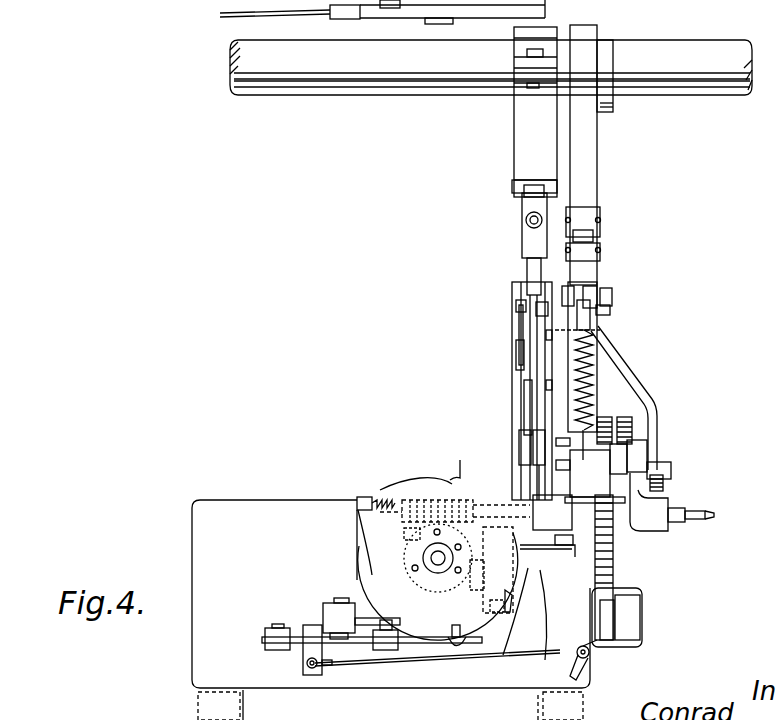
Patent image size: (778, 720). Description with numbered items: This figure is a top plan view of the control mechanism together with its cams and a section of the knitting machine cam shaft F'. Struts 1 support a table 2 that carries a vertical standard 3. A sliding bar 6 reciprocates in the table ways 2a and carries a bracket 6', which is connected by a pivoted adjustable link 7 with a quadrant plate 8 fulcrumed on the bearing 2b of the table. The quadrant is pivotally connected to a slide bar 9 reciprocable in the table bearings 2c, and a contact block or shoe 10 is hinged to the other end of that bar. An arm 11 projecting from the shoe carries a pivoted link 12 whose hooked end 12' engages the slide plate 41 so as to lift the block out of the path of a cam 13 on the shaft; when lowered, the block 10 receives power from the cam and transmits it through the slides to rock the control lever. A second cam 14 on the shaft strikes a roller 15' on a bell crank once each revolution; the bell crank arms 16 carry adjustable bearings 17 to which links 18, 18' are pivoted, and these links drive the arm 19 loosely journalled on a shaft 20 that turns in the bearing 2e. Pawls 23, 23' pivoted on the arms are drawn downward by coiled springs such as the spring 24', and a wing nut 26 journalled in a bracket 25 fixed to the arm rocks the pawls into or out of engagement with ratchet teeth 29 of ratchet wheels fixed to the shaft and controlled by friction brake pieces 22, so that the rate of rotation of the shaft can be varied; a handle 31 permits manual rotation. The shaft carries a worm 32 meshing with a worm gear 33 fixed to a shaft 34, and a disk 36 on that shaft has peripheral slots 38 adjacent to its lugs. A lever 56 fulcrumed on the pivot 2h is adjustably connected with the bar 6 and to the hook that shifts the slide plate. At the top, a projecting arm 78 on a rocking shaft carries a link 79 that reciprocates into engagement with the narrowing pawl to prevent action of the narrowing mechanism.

The struts 1 is at (345, 602).
The table 2 is at (202, 676).
The table ways 2a is at (280, 650).
The bearing 2b is at (610, 632).
The table bearings 2c is at (540, 338).
The bearing 2e is at (548, 510).
The pivot 2h is at (438, 605).
The vertical standard 3 is at (358, 575).
The sliding bar 6 is at (353, 638).
The bracket 6' is at (316, 631).
The pivoted adjustable link 7 is at (320, 558).
The quadrant plate 8 is at (554, 666).
The slide bar 9 is at (524, 390).
The contact block or shoe 10 is at (530, 250).
The arm 11 is at (528, 298).
The link 12 is at (503, 439).
The hooked end 12' is at (558, 661).
The cam 13 is at (522, 157).
The cam 14 is at (588, 52).
The roller 15' is at (614, 223).
The bell crank arms 16 is at (590, 292).
The bearings 17 is at (606, 298).
The link 18 is at (606, 357).
The link 18' is at (619, 398).
The arm 19 is at (548, 553).
The shaft 20 is at (476, 490).
The friction brake pieces 22 is at (640, 625).
The pawl 23 is at (632, 441).
The pawl 23' is at (671, 454).
The coiled spring 24' is at (684, 492).
The bracket 25 is at (622, 568).
The finger piece or wing nut 26 is at (652, 534).
The ratchet teeth 29 is at (612, 400).
The handle 31 is at (715, 515).
The worm 32 is at (432, 490).
The worm gear 33 is at (438, 583).
The shaft 34 is at (438, 558).
The disk 36 is at (418, 476).
The peripheral slots or recesses 38 is at (430, 478).
The slide plate 41 is at (540, 600).
The lever 56 is at (453, 627).
The projecting arm 78 is at (360, 20).
The link 79 is at (259, 11).
The cam shaft F' is at (496, 51).